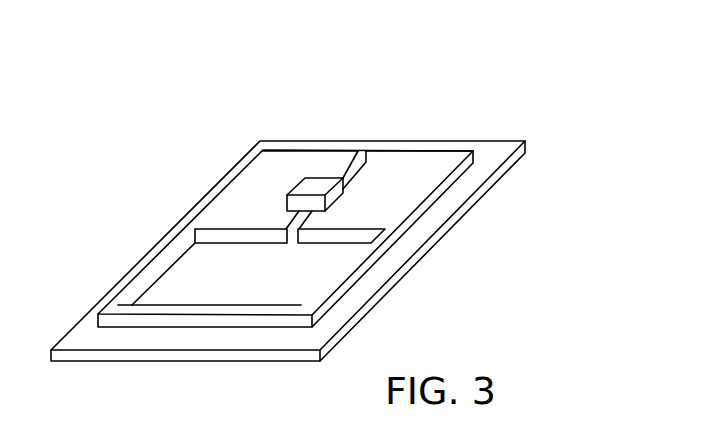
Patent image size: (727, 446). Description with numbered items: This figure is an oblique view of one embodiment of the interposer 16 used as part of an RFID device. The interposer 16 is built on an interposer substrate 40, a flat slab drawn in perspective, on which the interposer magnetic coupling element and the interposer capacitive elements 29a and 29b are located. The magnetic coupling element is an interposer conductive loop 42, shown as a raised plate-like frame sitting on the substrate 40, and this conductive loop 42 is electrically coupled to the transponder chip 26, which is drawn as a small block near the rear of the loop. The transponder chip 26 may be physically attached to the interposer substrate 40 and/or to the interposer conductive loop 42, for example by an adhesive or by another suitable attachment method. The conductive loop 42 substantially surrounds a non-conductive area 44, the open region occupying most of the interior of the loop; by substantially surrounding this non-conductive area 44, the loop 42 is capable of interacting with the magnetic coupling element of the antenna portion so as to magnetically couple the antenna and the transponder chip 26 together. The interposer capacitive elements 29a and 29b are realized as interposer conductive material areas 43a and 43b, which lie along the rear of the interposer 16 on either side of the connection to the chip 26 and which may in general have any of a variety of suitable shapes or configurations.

The interposer 16 is at (240, 138).
The interposer substrate 40 is at (498, 148).
The interposer conductive loop 42 is at (358, 272).
The non-conductive area 44 is at (247, 288).
The interposer capacitive element 29a is at (278, 123).
The interposer capacitive element 29b is at (433, 119).
The interposer conductive material area 43a is at (309, 153).
The interposer conductive material area 43b is at (441, 146).
The transponder chip 26 is at (315, 183).